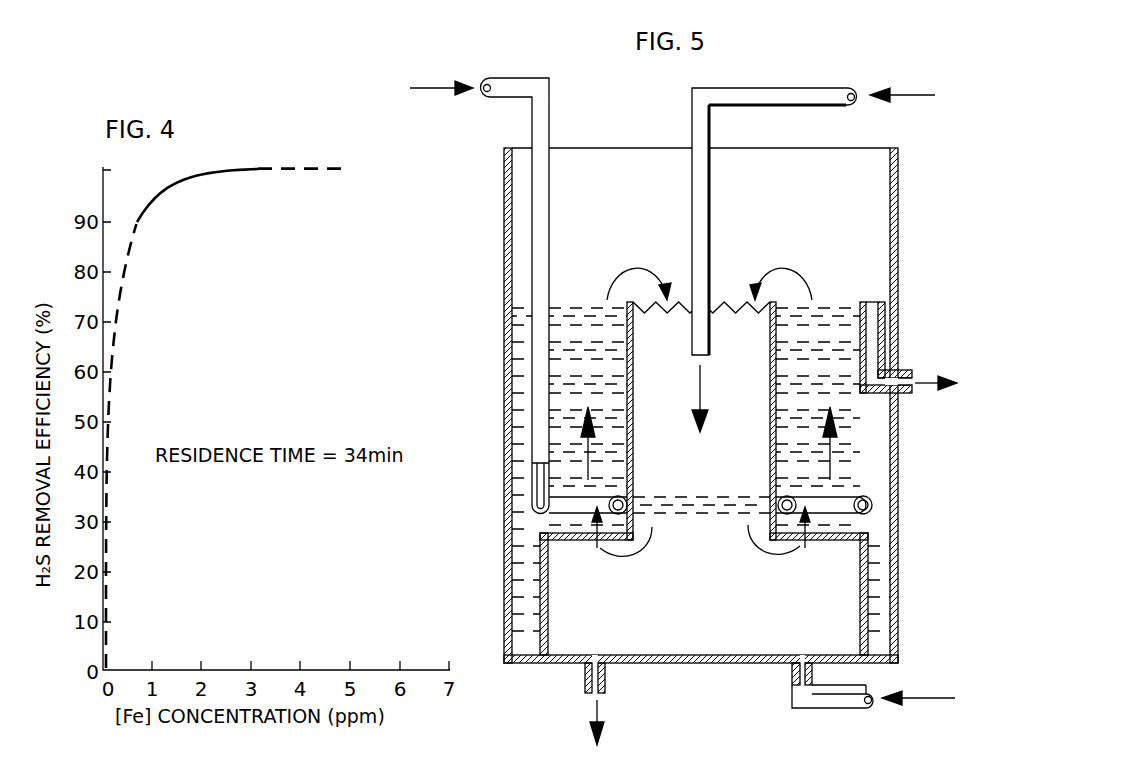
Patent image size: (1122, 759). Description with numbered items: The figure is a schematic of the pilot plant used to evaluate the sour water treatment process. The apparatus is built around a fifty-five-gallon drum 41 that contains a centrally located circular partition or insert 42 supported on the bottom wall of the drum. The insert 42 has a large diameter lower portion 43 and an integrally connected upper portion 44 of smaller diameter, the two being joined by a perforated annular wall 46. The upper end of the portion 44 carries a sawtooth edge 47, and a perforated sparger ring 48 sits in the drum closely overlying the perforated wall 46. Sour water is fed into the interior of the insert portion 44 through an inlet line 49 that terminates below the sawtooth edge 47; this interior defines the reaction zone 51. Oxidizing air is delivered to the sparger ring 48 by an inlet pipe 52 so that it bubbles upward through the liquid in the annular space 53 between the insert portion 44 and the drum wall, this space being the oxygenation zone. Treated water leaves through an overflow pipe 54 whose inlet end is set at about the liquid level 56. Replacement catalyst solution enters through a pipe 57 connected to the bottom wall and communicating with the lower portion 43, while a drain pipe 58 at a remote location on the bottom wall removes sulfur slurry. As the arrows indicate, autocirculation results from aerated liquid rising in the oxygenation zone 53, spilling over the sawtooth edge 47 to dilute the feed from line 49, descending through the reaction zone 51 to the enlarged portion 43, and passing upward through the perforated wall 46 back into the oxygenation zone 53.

The drum 41 is at (898, 258).
The insert 42 is at (885, 607).
The lower portion 43 is at (548, 580).
The upper portion 44 is at (633, 410).
The perforated annular wall 46 is at (832, 542).
The sawtooth edge 47 is at (752, 300).
The perforated sparger ring 48 is at (870, 505).
The inlet line 49 is at (790, 90).
The reaction zone 51 is at (742, 389).
The inlet pipe 52 is at (505, 78).
The annular space 53 is at (558, 373).
The overflow pipe 54 is at (880, 345).
The liquid level 56 is at (832, 302).
The pipe 57 is at (838, 708).
The drain pipe 58 is at (605, 672).